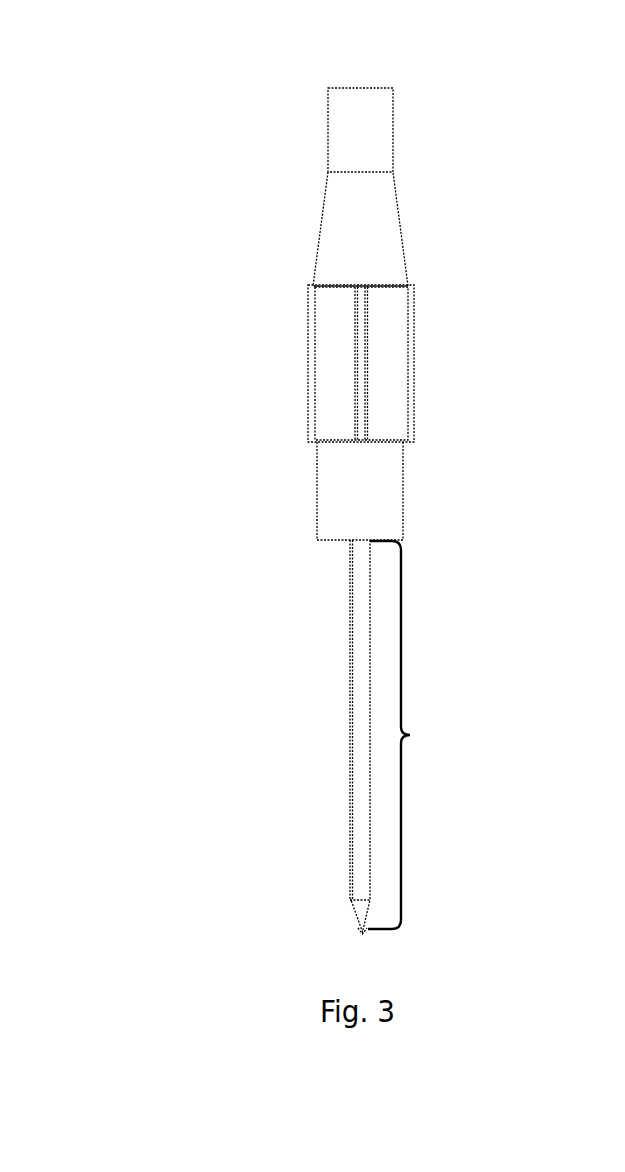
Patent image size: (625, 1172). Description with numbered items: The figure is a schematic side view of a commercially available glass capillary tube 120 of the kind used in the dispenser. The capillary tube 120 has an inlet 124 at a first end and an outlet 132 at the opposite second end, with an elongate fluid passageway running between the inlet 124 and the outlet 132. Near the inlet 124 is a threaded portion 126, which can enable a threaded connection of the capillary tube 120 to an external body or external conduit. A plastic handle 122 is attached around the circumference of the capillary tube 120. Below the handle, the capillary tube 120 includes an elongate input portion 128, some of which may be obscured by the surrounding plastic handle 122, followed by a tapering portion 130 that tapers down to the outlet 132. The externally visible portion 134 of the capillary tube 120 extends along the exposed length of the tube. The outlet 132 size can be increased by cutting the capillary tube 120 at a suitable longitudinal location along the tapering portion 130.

The capillary tube 120 is at (190, 103).
The plastic handle 122 is at (298, 335).
The inlet 124 is at (361, 72).
The threaded portion 126 is at (404, 132).
The elongate input portion 128 is at (340, 672).
The tapering portion 130 is at (340, 912).
The outlet 132 is at (348, 936).
The externally visible portion 134 is at (442, 735).